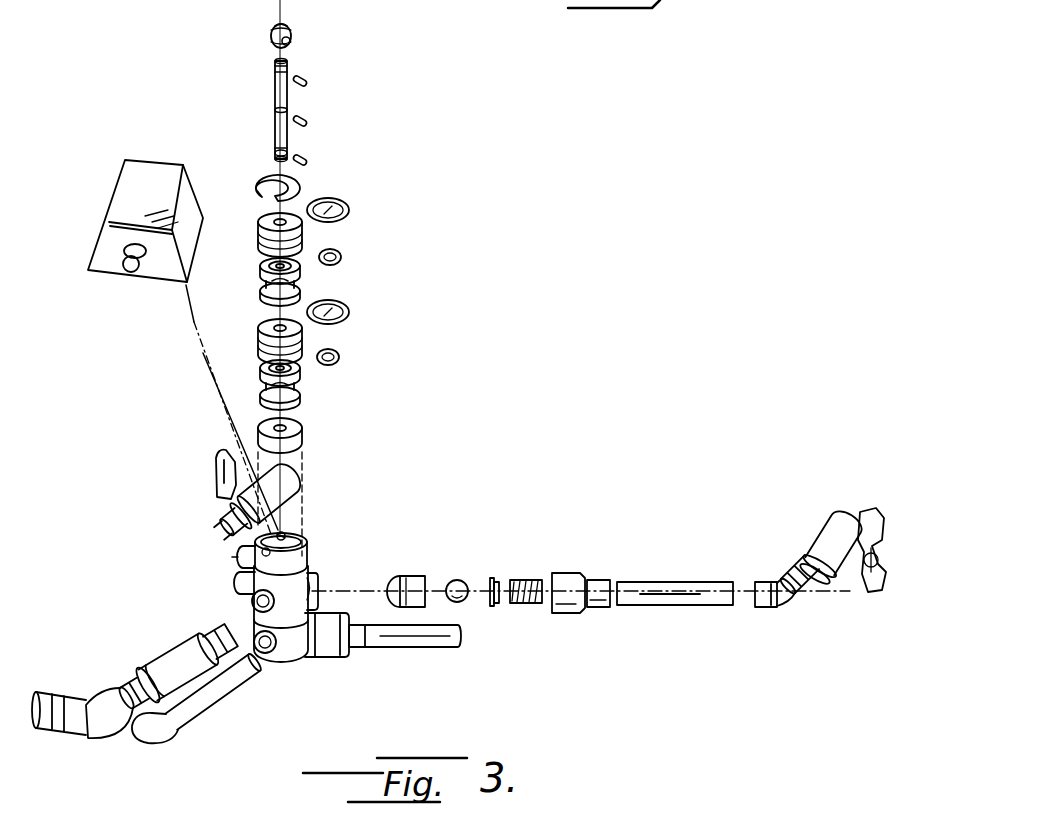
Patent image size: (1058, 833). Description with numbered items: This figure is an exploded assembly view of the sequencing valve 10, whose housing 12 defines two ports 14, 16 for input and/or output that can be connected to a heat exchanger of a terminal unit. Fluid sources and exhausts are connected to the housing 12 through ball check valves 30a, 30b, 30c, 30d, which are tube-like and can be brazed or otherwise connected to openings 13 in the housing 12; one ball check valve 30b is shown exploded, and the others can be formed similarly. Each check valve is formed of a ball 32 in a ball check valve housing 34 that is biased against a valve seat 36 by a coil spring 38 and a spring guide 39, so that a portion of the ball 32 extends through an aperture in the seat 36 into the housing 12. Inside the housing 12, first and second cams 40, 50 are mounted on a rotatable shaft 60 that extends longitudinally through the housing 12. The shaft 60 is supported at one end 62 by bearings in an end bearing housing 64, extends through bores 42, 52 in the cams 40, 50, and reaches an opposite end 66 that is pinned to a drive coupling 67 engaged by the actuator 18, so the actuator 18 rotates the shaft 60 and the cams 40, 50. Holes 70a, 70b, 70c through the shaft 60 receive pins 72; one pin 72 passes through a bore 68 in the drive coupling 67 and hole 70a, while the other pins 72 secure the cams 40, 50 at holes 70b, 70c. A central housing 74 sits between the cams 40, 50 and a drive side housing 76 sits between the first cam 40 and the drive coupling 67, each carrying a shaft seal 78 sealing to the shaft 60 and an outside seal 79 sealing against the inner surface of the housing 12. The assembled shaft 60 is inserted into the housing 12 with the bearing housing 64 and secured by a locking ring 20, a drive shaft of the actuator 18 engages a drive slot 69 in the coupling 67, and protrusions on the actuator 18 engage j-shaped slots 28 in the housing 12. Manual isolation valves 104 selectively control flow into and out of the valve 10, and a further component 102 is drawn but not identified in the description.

The sequencing valve 10 is at (212, 432).
The housing 12 is at (288, 664).
The openings 13 is at (306, 632).
The port 14 is at (252, 604).
The port 16 is at (268, 658).
The actuator 18 is at (126, 188).
The locking ring 20 is at (302, 186).
The j-shaped slots 28 is at (290, 534).
The ball check valve 30a is at (228, 551).
The ball check valve 30b is at (547, 544).
The ball check valve 30c is at (226, 586).
The ball check valve 30d is at (340, 650).
The ball 32 is at (462, 580).
The ball check valve housing 34 is at (585, 612).
The valve seat 36 is at (412, 574).
The coil spring 38 is at (530, 602).
The spring guide 39 is at (493, 608).
The first cam 40 is at (302, 276).
The bore 42 is at (262, 264).
The second cam 50 is at (262, 396).
The bore 52 is at (262, 364).
The rotatable shaft 60 is at (284, 100).
The end 62 is at (275, 160).
The end bearing housing 64 is at (298, 430).
The end 66 is at (276, 60).
The drive coupling 67 is at (289, 30).
The bore 68 is at (290, 41).
The drive slot 69 is at (273, 30).
The hole 70a is at (276, 73).
The hole 70b is at (276, 110).
The hole 70c is at (277, 146).
The pins 72 is at (305, 80).
The central housing 74 is at (303, 336).
The drive side housing 76 is at (303, 232).
The shaft seal 78 is at (320, 256).
The outside seal 79 is at (346, 204).
The hose assembly 102 is at (160, 654).
The manual isolation valve 104 is at (240, 500).